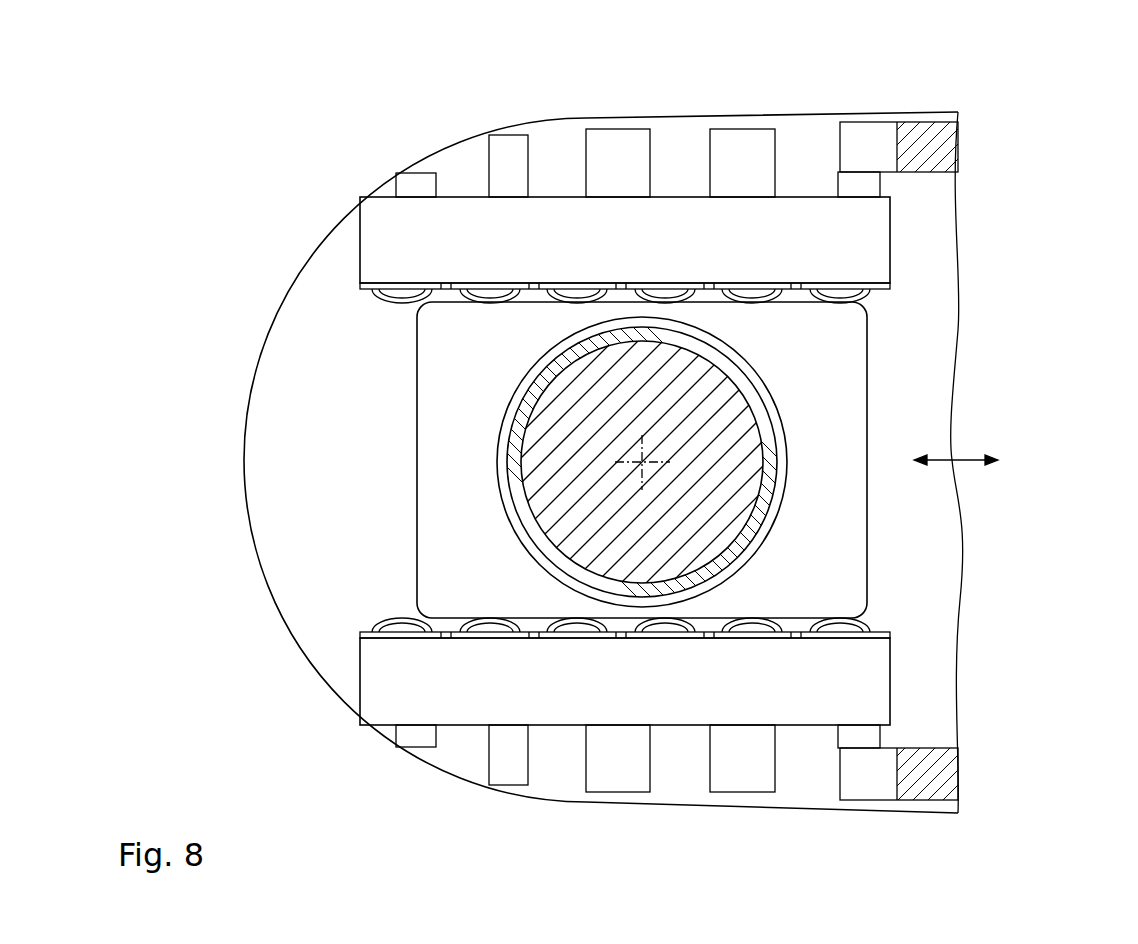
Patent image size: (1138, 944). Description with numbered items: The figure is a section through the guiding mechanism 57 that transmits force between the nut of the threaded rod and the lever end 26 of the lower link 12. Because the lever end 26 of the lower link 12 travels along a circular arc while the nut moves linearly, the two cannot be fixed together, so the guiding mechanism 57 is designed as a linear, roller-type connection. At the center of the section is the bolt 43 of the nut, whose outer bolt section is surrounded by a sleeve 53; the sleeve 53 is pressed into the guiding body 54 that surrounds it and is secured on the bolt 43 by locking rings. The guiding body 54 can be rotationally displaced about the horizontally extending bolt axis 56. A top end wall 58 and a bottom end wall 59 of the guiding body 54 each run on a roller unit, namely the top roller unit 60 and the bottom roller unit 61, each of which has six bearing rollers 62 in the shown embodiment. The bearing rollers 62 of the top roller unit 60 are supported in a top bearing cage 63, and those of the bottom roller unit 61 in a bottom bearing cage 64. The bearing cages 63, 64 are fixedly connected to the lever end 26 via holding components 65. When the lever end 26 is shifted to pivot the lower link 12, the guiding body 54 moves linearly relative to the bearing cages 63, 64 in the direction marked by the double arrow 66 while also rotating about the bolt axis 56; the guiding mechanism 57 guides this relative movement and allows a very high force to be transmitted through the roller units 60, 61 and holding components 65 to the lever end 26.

The lower link 12 is at (605, 462).
The lever end 26 is at (258, 492).
The bolt 43 is at (752, 450).
The sleeve 53 is at (780, 403).
The guiding body 54 is at (843, 410).
The bolt axis 56 is at (645, 465).
The guiding mechanism 57 is at (908, 534).
The top end wall 58 is at (805, 290).
The bottom end wall 59 is at (807, 650).
The top roller unit 60 is at (604, 202).
The bottom roller unit 61 is at (604, 711).
The bearing rollers 62 is at (867, 297).
The top bearing cage 63 is at (882, 262).
The bottom bearing cage 64 is at (877, 687).
The holding components 65 is at (615, 135).
The double arrow 66 is at (978, 460).